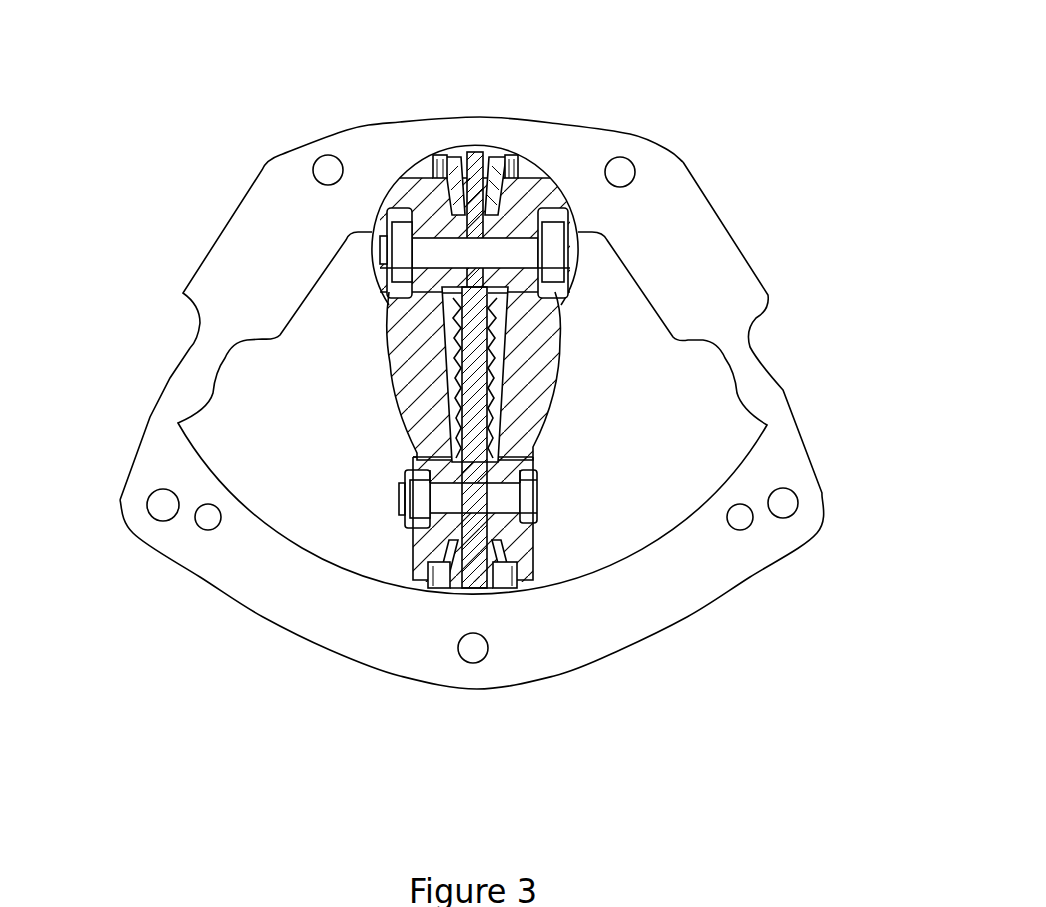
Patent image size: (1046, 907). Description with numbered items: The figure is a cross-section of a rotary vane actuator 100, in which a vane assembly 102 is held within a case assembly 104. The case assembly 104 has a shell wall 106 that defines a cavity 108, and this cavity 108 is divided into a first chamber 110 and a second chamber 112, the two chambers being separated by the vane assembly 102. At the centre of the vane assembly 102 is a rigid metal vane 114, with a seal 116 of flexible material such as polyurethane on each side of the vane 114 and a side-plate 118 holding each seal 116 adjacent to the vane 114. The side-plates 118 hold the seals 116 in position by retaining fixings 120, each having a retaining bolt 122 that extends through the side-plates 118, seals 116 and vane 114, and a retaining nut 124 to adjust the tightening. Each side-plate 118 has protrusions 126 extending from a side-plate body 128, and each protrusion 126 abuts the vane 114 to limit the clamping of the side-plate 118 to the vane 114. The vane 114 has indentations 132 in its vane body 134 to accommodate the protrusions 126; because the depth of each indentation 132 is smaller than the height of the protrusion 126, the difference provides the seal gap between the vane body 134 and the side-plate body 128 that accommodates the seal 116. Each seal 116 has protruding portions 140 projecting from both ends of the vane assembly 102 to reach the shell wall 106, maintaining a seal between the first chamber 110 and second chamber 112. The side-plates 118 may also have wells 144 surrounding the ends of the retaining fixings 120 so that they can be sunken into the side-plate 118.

The actuator 100 is at (270, 657).
The vane assembly 102 is at (420, 570).
The case assembly 104 is at (560, 647).
The shell wall 106 is at (623, 257).
The cavity 108 is at (633, 530).
The first chamber 110 is at (217, 417).
The second chamber 112 is at (743, 432).
The vane 114 is at (477, 377).
The seal 116 is at (493, 393).
The side-plate 118 is at (527, 417).
The retaining fixing 120 is at (550, 278).
The retaining bolt 122 is at (523, 253).
The retaining nut 124 is at (395, 280).
The protrusion 126 is at (493, 230).
The side-plate body 128 is at (520, 433).
The indentation 132 is at (430, 305).
The vane body 134 is at (480, 338).
The protruding portion 140 is at (507, 150).
The well 144 is at (568, 217).